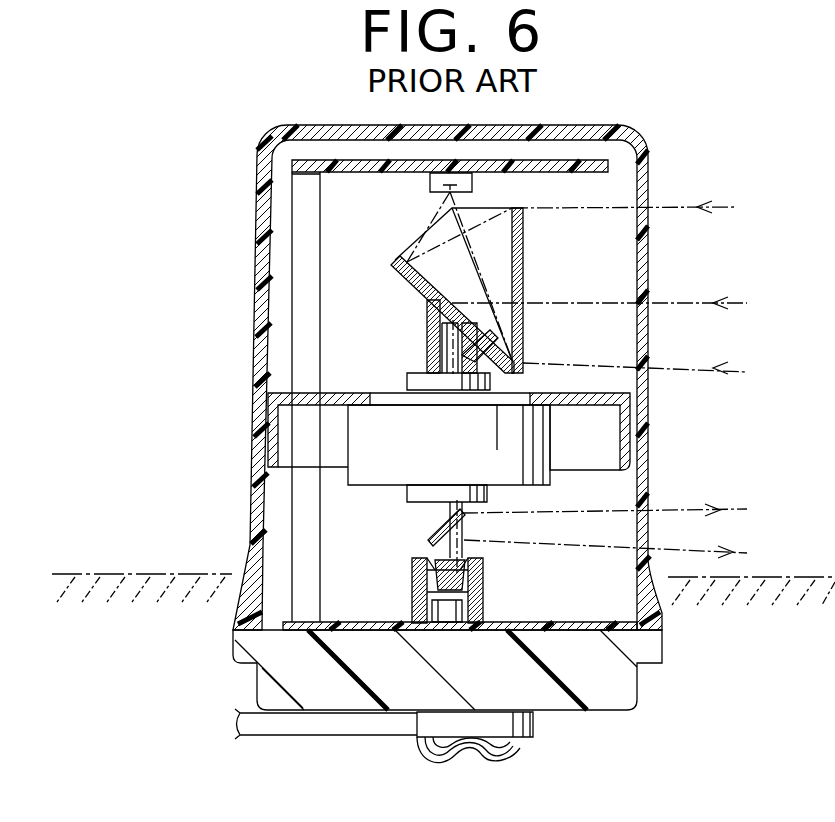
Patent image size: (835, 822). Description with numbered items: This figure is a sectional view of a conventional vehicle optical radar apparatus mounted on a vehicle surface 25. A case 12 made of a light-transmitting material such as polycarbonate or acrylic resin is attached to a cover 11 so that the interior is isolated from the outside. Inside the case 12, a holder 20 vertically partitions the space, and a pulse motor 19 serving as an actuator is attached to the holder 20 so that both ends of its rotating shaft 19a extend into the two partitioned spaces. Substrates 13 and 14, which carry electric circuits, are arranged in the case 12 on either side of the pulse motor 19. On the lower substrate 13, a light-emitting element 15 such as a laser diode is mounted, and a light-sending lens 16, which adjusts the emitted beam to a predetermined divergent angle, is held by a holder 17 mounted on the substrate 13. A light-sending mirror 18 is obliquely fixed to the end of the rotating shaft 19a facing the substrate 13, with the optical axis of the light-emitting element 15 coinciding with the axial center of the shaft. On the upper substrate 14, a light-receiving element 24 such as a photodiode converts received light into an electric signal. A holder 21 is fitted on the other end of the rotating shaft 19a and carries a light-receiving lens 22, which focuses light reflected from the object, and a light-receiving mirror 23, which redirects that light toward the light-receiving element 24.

The cover 11 is at (640, 695).
The case 12 is at (663, 620).
The substrate 13 is at (340, 617).
The substrate 14 is at (648, 170).
The light-emitting element 15 is at (433, 607).
The light-sending lens 16 is at (448, 555).
The holder 17 is at (417, 565).
The light-sending mirror 18 is at (463, 515).
The pulse motor 19 is at (552, 448).
The rotating shaft 19a is at (450, 350).
The holder 20 is at (607, 397).
The holder 21 is at (427, 313).
The light-receiving lens 22 is at (523, 278).
The light-receiving mirror 23 is at (430, 247).
The light-receiving element 24 is at (472, 182).
The vehicle surface 25 is at (788, 577).